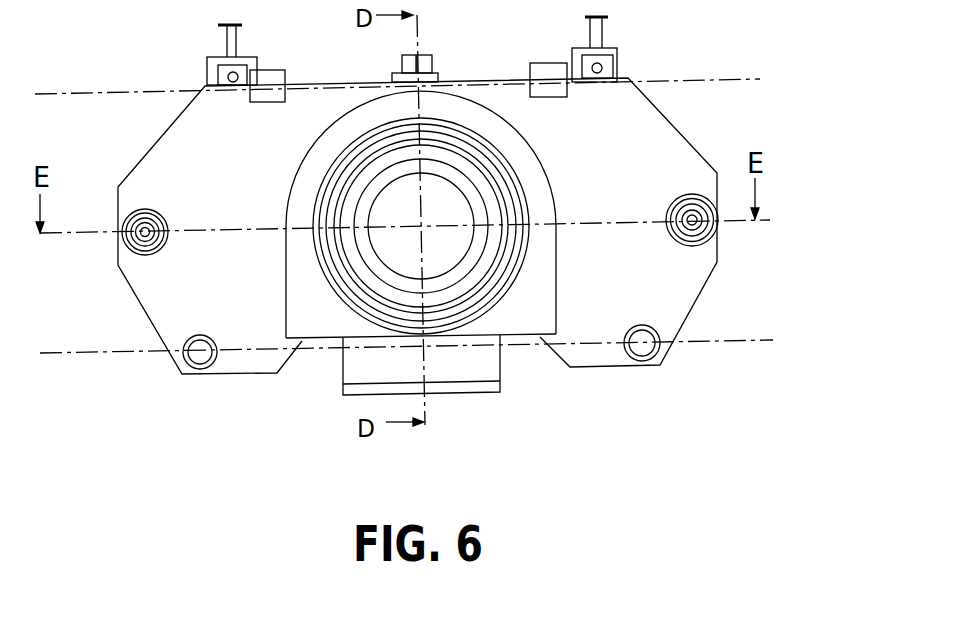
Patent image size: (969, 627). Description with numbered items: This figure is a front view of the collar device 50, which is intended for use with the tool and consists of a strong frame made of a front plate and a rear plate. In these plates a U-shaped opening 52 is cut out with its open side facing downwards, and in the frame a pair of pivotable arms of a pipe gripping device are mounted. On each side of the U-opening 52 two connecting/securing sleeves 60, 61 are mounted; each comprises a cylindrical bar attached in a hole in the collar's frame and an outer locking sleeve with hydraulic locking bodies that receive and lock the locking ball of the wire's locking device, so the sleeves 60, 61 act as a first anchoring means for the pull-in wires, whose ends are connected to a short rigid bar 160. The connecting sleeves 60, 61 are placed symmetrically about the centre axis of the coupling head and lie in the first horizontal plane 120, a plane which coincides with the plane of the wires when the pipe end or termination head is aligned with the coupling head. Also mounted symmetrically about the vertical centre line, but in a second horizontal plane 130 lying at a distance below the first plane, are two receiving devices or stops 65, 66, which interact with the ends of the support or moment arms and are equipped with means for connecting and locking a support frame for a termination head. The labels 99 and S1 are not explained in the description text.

The collar device 50 is at (691, 122).
The U-shaped opening 52 is at (287, 308).
The connecting/securing sleeve 60 is at (128, 247).
The connecting/securing sleeve 61 is at (700, 243).
The receiving device or stop 65 is at (200, 369).
The receiving device or stop 66 is at (660, 354).
The clamp assembly 99 is at (272, 68).
The first horizontal plane 120 is at (603, 218).
The second horizontal plane 130 is at (697, 338).
The short rigid bar 160 is at (658, 64).
The inclined side surface S1 is at (185, 158).